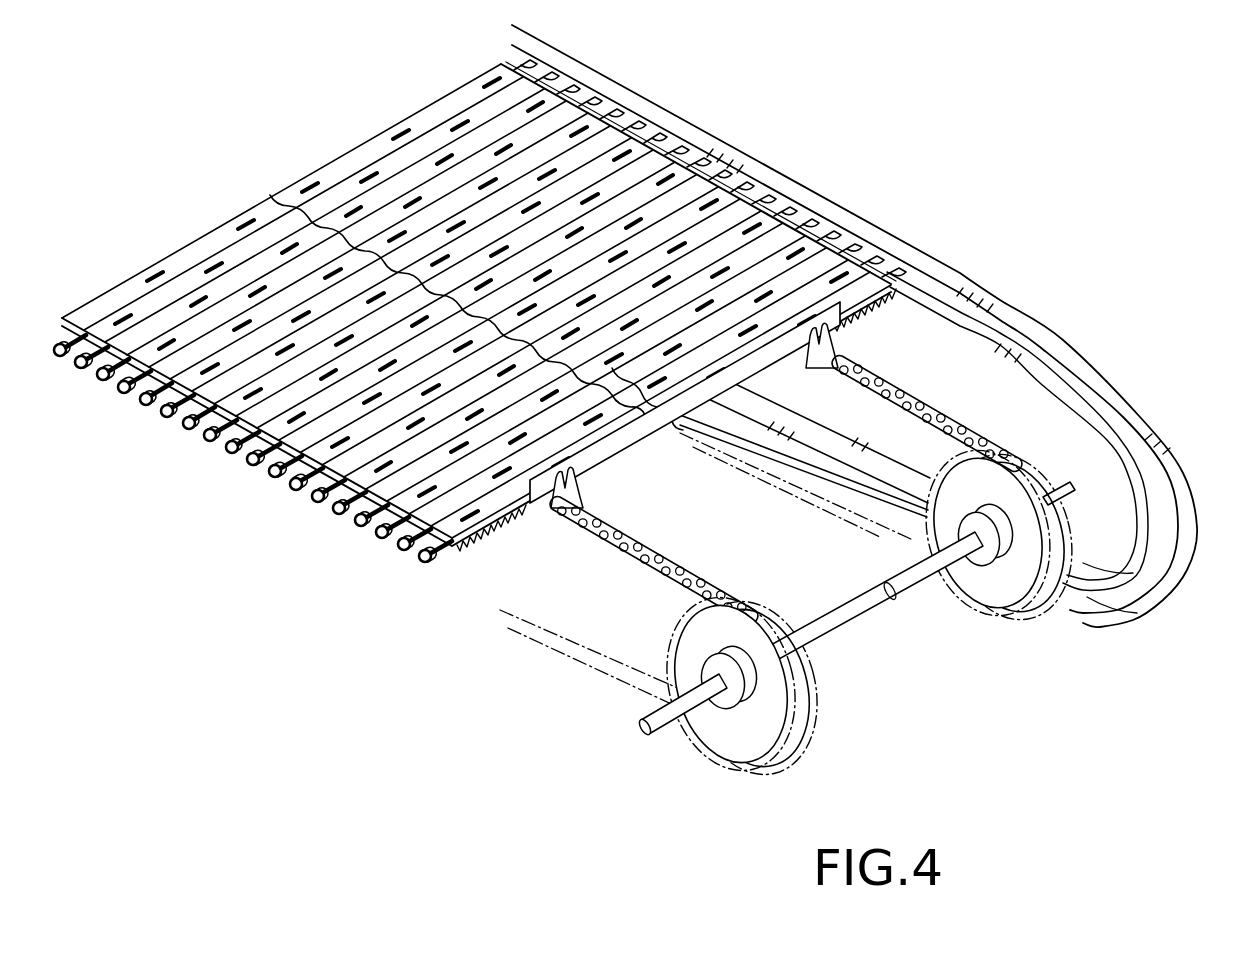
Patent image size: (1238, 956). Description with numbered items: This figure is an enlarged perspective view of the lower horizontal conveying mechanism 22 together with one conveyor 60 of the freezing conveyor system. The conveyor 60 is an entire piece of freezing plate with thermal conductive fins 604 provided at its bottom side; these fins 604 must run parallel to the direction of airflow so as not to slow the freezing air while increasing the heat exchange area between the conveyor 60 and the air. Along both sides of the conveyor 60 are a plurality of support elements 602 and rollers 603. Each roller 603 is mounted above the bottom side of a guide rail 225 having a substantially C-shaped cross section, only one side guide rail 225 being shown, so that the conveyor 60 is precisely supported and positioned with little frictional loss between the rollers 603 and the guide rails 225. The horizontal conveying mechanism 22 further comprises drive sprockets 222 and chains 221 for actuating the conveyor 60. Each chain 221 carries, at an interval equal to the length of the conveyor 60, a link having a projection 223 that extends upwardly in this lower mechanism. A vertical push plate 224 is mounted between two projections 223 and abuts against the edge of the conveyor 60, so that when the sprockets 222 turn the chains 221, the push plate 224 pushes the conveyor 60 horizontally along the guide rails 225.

The lower horizontal conveying mechanism 22 is at (977, 260).
The conveyor 60 is at (222, 224).
The chain 221 is at (958, 432).
The drive sprocket 222 is at (1008, 584).
The projection 223 is at (838, 347).
The vertical push plate 224 is at (645, 443).
The guide rail 225 is at (1077, 356).
The support element 602 is at (687, 148).
The roller 603 is at (753, 185).
The thermal conductive fin 604 is at (481, 548).